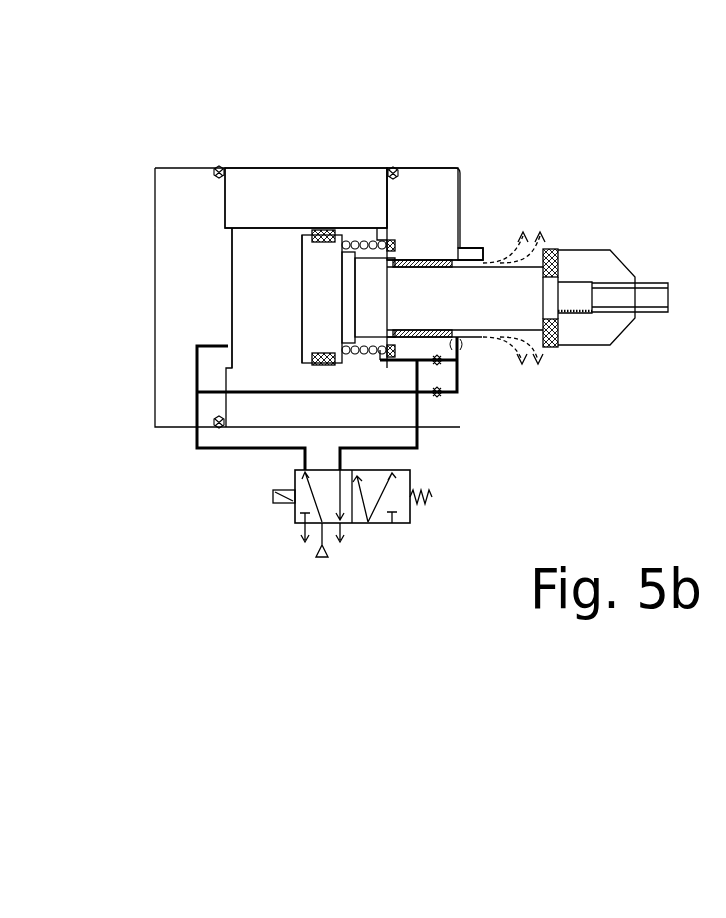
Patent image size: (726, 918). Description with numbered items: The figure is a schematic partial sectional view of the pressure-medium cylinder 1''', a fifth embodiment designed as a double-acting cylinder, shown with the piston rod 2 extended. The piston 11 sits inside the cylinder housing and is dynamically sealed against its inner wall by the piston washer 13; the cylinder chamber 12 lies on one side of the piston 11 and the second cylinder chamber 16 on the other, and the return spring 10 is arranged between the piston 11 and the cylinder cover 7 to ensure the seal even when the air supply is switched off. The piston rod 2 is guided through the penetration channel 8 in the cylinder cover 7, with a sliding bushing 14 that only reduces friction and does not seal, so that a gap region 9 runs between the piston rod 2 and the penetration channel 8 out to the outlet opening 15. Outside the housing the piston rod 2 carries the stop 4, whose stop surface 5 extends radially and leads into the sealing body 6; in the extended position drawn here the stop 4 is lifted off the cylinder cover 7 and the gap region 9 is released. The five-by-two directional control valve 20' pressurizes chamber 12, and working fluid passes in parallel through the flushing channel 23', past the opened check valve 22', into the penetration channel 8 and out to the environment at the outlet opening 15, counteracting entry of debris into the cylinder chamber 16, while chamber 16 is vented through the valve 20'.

The pressure-medium cylinder 1''' is at (272, 223).
The piston rod 2 is at (578, 322).
The stop 4 is at (620, 250).
The stop surface 5 is at (577, 298).
The sealing body 6 is at (553, 247).
The cylinder cover 7 is at (408, 198).
The penetration channel 8 is at (470, 347).
The gap region 9 is at (462, 260).
The return spring 10 is at (304, 235).
The piston 11 is at (302, 295).
The cylinder chamber 12 is at (268, 257).
The piston washer 13 is at (318, 228).
The sliding bushing 14 is at (422, 260).
The outlet opening 15 is at (487, 263).
The cylinder chamber 16 is at (357, 242).
The 5/2 directional control valve 20' is at (279, 518).
The check valve 22' is at (500, 463).
The flushing channel 23' is at (253, 415).